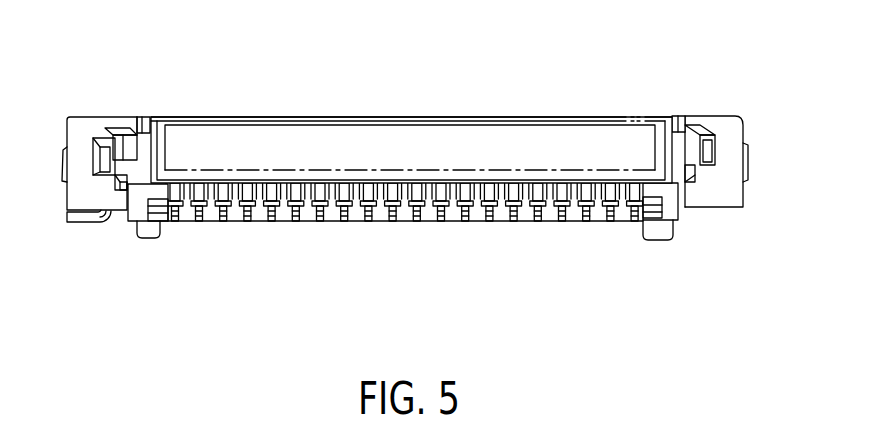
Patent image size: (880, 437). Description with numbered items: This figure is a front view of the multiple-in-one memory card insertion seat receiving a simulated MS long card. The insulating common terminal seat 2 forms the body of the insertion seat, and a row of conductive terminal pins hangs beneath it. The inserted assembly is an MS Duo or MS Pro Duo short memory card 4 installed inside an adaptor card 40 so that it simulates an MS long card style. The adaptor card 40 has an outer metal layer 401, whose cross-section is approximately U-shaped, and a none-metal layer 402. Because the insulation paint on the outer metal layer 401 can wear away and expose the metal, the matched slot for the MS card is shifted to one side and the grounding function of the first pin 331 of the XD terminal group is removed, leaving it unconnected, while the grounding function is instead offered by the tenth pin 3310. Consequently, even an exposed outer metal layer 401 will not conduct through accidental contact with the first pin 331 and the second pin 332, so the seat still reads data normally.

The common terminal seat 2 is at (707, 198).
The memory card 4 is at (411, 97).
The adaptor card 40 is at (605, 114).
The outer metal layer 401 is at (272, 116).
The none-metal layer 402 is at (382, 172).
The first pin 331 is at (631, 203).
The second pin 332 is at (606, 210).
The tenth pin 3310 is at (417, 192).